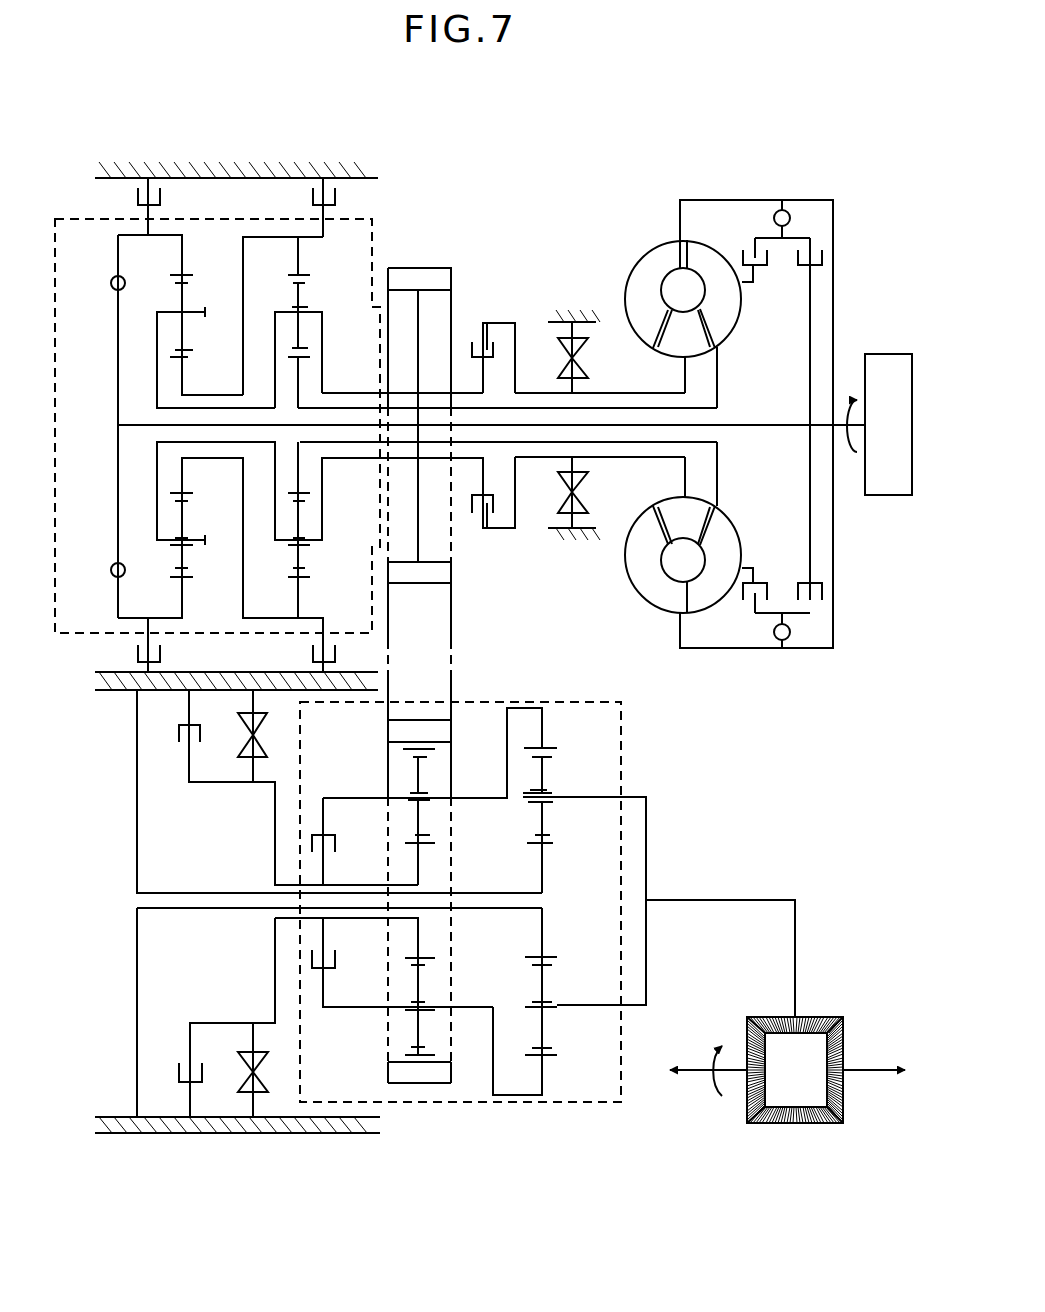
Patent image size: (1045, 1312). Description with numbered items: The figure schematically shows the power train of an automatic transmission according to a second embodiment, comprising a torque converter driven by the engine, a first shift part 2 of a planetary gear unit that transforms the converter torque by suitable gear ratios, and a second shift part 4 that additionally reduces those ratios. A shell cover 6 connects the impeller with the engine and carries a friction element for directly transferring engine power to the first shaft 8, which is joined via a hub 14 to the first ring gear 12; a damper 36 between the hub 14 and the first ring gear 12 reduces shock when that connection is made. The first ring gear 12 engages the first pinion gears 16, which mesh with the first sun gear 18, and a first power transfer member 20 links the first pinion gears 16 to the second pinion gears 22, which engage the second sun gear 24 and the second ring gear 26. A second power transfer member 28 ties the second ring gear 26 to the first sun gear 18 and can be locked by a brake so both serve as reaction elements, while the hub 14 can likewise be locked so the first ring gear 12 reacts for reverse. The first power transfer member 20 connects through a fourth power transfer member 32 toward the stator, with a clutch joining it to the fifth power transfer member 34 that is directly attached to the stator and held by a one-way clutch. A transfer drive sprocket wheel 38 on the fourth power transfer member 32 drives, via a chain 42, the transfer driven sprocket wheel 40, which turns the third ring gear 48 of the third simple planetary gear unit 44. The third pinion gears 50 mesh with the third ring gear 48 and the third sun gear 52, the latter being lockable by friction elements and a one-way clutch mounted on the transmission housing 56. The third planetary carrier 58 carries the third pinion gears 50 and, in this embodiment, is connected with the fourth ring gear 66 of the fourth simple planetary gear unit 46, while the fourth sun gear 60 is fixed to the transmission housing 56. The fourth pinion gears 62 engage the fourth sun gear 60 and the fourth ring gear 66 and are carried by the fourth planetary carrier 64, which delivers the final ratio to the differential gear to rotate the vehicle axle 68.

The first shift part 2 is at (75, 218).
The second shift part 4 is at (630, 737).
The shell cover 6 is at (765, 200).
The first shaft 8 is at (772, 423).
The first ring gear 12 is at (182, 275).
The hub 14 is at (118, 356).
The first pinion gears 16 is at (186, 350).
The first sun gear 18 is at (186, 358).
The first power transfer member 20 is at (177, 408).
The second pinion gears 22 is at (303, 285).
The second sun gear 24 is at (300, 376).
The second ring gear 26 is at (298, 274).
The second power transfer member 28 is at (243, 258).
The fourth power transfer member 32 is at (323, 330).
The fifth power transfer member 34 is at (540, 392).
The damper 36 is at (111, 283).
The transfer drive sprocket wheel 38 is at (451, 278).
The transfer driven sprocket wheel 40 is at (402, 740).
The chain 42 is at (452, 551).
The third simple planetary gear unit 44 is at (432, 1019).
The fourth simple planetary gear unit 46 is at (560, 1040).
The third ring gear 48 is at (412, 749).
The third pinion gears 50 is at (425, 772).
The third sun gear 52 is at (433, 844).
The transmission housing 56 is at (242, 172).
The third planetary carrier 58 is at (483, 798).
The fourth sun gear 60 is at (552, 845).
The fourth pinion gears 62 is at (543, 778).
The fourth planetary carrier 64 is at (797, 936).
The fourth ring gear 66 is at (547, 748).
The vehicle axle 68 is at (874, 1068).